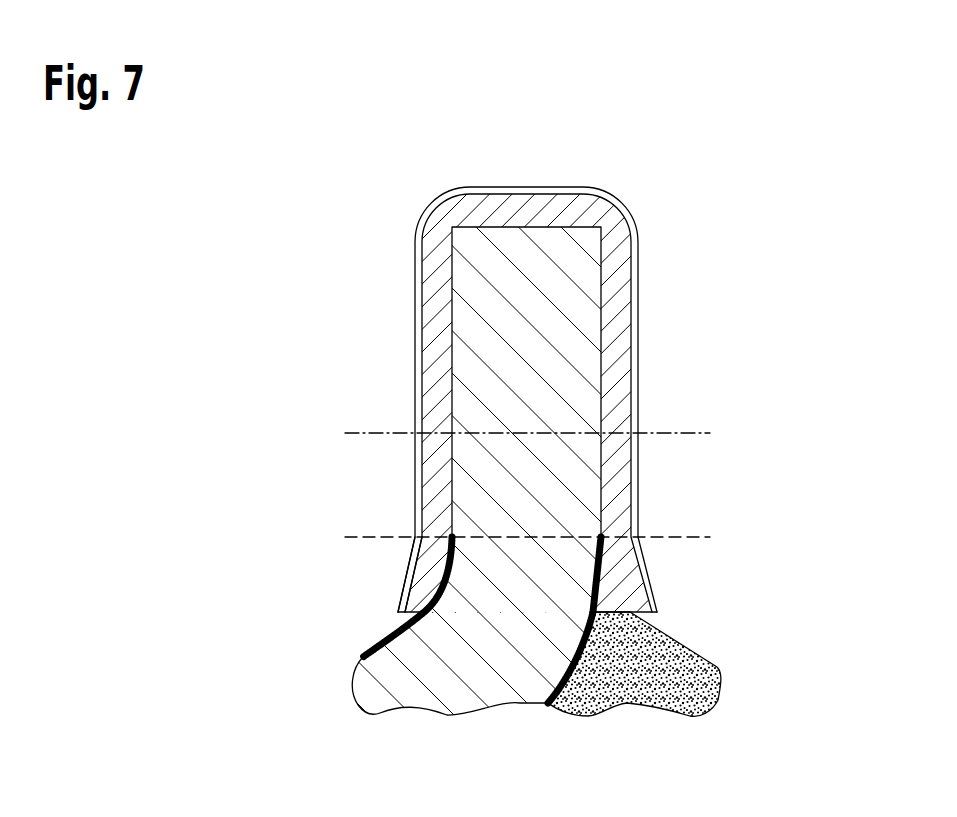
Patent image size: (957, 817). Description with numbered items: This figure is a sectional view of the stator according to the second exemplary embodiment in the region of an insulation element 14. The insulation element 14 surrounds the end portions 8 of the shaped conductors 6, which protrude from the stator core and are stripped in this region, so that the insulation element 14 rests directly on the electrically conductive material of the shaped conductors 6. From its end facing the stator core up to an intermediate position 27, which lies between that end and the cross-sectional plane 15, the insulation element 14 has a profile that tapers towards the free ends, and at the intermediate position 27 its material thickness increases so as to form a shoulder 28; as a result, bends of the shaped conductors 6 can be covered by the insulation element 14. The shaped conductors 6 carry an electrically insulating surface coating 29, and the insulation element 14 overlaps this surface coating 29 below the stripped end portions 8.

The shaped conductor 6 is at (430, 666).
The end portion 8 is at (570, 350).
The insulation element 14 is at (638, 273).
The cross-sectional plane 15 is at (673, 433).
The intermediate position 27 is at (667, 535).
The shoulder 28 is at (406, 544).
The surface coating 29 is at (398, 633).